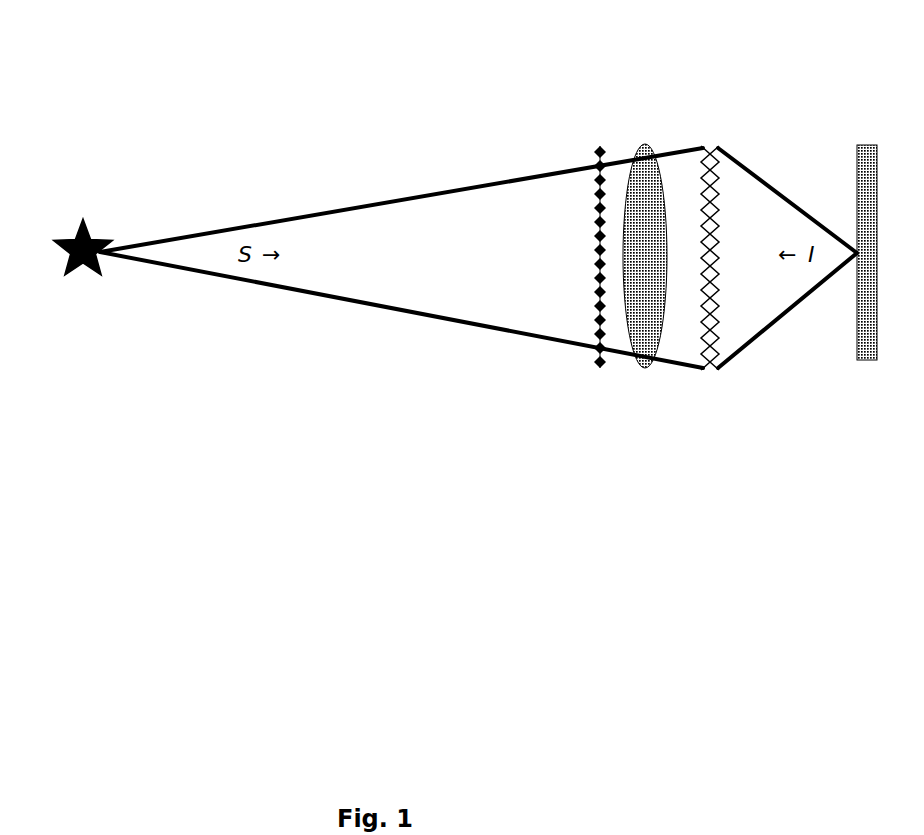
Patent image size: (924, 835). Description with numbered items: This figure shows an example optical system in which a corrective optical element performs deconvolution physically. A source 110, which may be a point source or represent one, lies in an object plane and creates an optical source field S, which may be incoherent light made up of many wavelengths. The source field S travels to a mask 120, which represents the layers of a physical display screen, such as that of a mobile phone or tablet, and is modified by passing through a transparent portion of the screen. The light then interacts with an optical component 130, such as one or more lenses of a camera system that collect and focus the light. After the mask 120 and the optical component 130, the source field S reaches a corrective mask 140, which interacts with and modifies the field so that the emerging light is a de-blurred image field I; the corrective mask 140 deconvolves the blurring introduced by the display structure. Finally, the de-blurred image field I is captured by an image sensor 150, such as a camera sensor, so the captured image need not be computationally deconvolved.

The source 110 is at (83, 269).
The mask 120 is at (600, 380).
The optical component 130 is at (645, 256).
The corrective mask 140 is at (710, 137).
The image sensor 150 is at (867, 373).